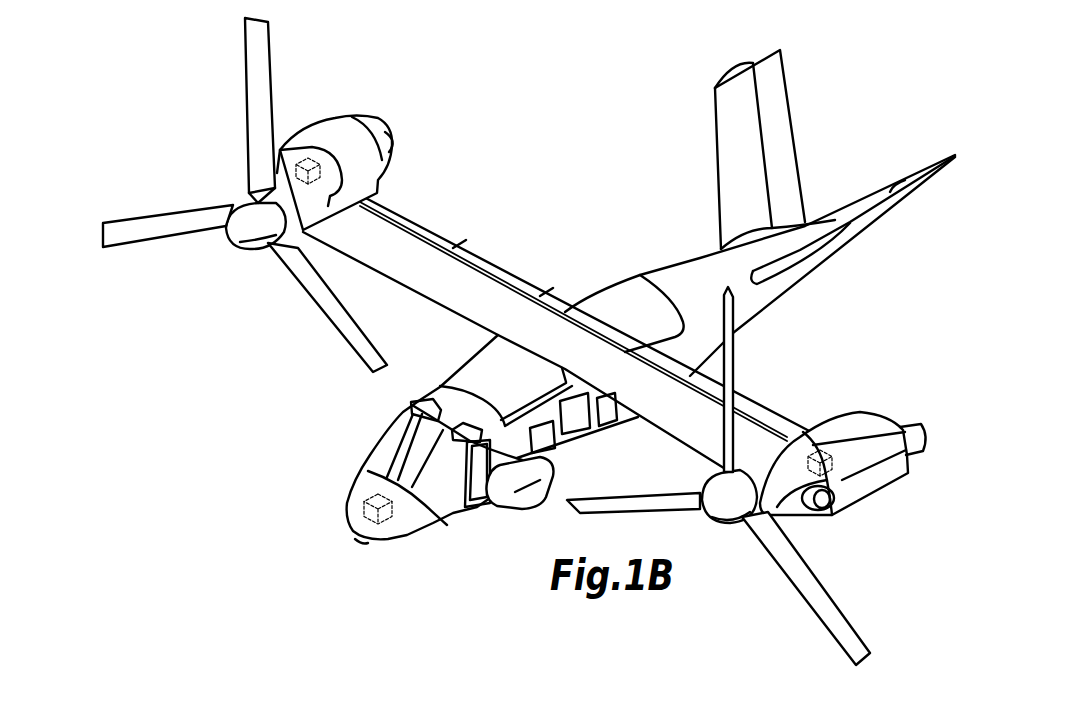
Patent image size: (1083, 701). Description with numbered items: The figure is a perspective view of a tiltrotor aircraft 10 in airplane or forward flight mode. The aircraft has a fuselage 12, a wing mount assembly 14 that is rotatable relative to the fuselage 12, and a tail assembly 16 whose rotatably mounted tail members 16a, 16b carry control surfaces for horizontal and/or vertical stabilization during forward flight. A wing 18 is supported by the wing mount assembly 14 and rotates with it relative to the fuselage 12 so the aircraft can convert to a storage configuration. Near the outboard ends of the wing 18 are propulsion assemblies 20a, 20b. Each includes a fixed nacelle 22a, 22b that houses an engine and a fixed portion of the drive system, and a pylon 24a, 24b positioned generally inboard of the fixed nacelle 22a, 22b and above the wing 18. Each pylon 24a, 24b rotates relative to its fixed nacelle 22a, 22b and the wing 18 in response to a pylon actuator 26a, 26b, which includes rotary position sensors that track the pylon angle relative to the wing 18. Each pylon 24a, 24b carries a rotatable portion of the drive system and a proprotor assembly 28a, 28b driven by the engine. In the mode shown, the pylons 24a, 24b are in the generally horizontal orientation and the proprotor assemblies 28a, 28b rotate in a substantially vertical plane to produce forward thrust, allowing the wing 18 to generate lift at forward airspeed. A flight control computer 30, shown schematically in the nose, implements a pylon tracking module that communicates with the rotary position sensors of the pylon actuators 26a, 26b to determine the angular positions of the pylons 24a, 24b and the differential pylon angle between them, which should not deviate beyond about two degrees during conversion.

The tiltrotor aircraft 10 is at (553, 191).
The fuselage 12 is at (675, 271).
The wing mount assembly 14 is at (598, 300).
The tail assembly 16 is at (796, 114).
The tail member 16a is at (855, 213).
The tail member 16b is at (740, 86).
The wing 18 is at (473, 273).
The propulsion assembly 20a is at (840, 412).
The propulsion assembly 20b is at (335, 120).
The fixed nacelle 22a is at (875, 428).
The fixed nacelle 22b is at (367, 135).
The pylon 24a is at (787, 441).
The pylon 24b is at (317, 156).
The pylon actuator 26a is at (837, 477).
The pylon actuator 26b is at (318, 178).
The proprotor assembly 28a is at (838, 616).
The proprotor assembly 28b is at (247, 111).
The flight control computer 30 is at (398, 537).